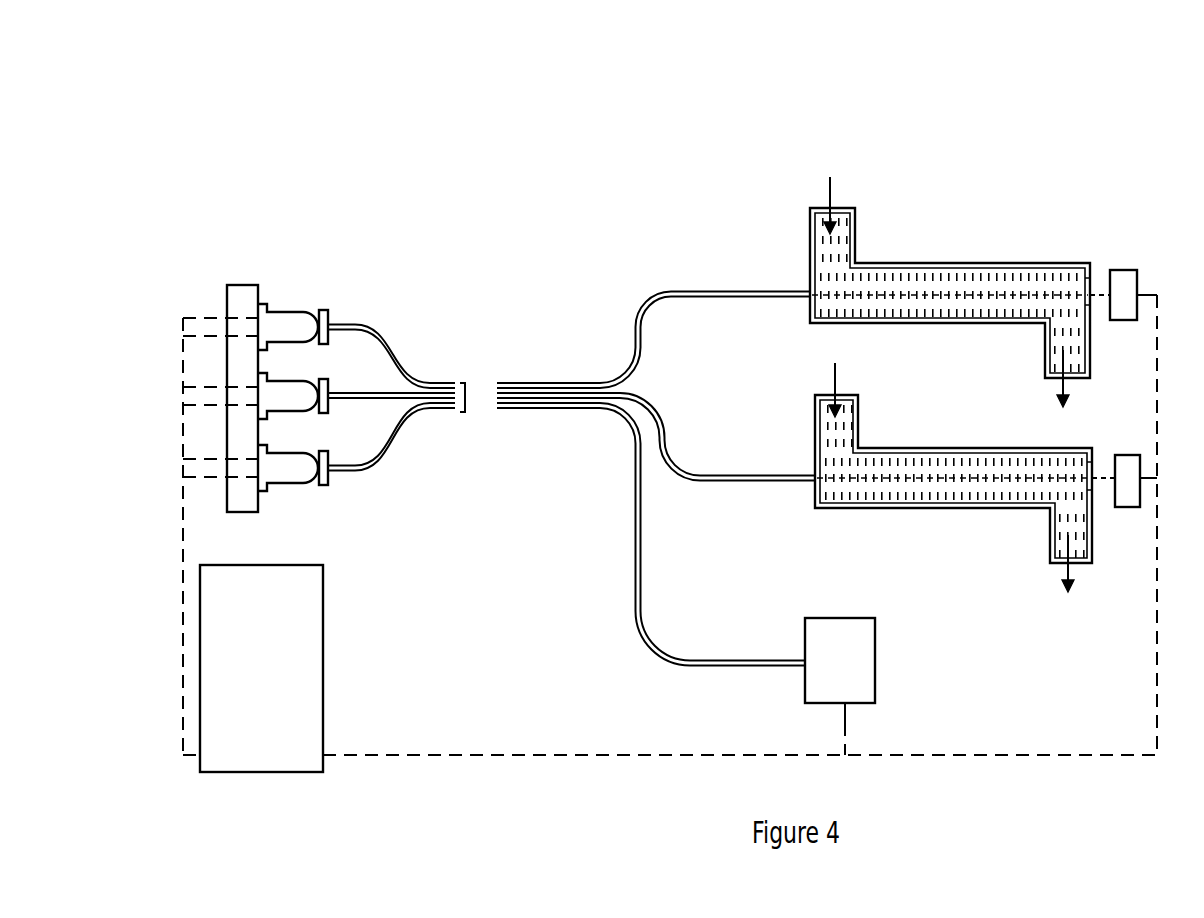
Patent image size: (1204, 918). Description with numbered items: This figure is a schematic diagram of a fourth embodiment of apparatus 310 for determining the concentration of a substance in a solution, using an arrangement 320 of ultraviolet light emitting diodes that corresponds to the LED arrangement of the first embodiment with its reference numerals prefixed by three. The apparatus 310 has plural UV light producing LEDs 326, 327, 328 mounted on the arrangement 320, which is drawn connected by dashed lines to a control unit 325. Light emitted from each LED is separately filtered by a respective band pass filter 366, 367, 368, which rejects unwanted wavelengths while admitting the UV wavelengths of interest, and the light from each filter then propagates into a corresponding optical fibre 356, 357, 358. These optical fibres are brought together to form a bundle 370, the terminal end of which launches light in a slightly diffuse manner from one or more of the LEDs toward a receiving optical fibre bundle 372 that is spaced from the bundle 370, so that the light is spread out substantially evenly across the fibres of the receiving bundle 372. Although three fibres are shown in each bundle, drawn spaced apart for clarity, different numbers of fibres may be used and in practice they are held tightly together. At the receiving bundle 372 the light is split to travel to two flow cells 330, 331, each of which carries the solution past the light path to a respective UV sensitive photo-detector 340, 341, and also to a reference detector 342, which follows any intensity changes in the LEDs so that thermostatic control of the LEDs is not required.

The apparatus 310 is at (991, 57).
The arrangement of light emitting diodes 320 is at (432, 160).
The controller 325 is at (288, 733).
The UV light producing LED 326 is at (303, 452).
The UV light producing LED 327 is at (292, 402).
The UV light producing LED 328 is at (280, 323).
The flow cell 330 is at (943, 270).
The flow cell 331 is at (950, 457).
The photo-detector 340 is at (1122, 283).
The photo-detector 341 is at (1125, 468).
The reference detector 342 is at (822, 640).
The optical fibre 356 is at (438, 407).
The optical fibre 357 is at (422, 393).
The optical fibre 358 is at (420, 385).
The band pass filter 366 is at (330, 487).
The band pass filter 367 is at (328, 410).
The band pass filter 368 is at (328, 345).
The bundle 370 is at (465, 397).
The receiving optical fibre bundle 372 is at (543, 426).